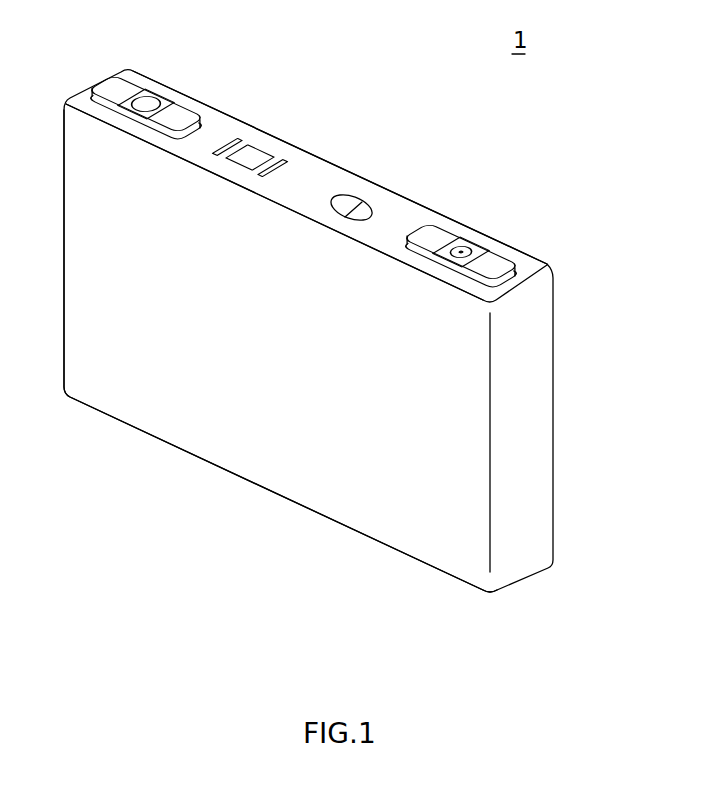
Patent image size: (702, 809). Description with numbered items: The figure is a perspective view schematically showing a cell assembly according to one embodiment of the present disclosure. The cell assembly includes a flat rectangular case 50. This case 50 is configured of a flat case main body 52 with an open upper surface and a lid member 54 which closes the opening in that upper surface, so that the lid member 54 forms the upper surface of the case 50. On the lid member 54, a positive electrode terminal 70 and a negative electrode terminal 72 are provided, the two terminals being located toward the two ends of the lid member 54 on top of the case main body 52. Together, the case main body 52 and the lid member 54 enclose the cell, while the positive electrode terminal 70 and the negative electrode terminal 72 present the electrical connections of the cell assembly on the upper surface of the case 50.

The case 50 is at (323, 463).
The case main body 52 is at (223, 425).
The lid member 54 is at (305, 168).
The positive electrode terminal 70 is at (472, 249).
The negative electrode terminal 72 is at (155, 102).